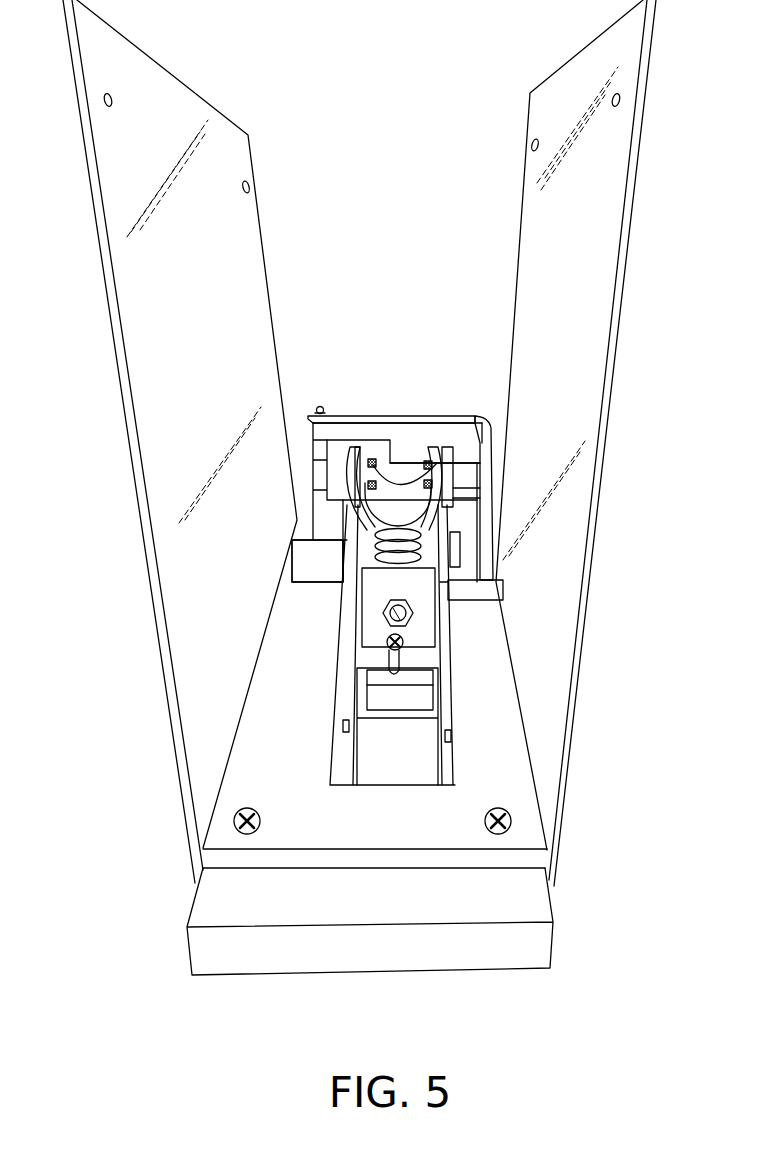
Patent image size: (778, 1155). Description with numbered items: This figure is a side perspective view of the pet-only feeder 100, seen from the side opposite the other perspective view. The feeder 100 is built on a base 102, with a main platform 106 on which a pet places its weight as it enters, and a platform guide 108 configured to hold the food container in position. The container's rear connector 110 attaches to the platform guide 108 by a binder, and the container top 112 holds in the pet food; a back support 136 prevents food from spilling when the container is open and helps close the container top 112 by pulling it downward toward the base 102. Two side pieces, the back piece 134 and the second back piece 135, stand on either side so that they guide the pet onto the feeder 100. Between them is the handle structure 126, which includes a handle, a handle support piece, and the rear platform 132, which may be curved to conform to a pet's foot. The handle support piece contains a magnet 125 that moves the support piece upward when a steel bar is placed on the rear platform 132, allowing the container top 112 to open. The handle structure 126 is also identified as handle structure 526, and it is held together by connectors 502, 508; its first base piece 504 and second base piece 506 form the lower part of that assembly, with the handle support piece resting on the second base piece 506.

The pet-only feeder 100 is at (277, 83).
The base 102 is at (523, 902).
The main platform 106 is at (524, 830).
The platform guide 108 is at (304, 527).
The rear connector 110 is at (343, 417).
The container top 112 is at (423, 437).
The handle support piece magnet 125 is at (312, 540).
The handle structure 126 is at (392, 552).
The rear platform 132 is at (402, 506).
The back piece 134 is at (577, 663).
The second back piece 135 is at (150, 581).
The back support 136 is at (483, 430).
The connector 502 is at (235, 814).
The first base piece 504 is at (390, 743).
The second base piece 506 is at (380, 678).
The connector 508 is at (393, 621).
The handle structure 526 is at (455, 573).